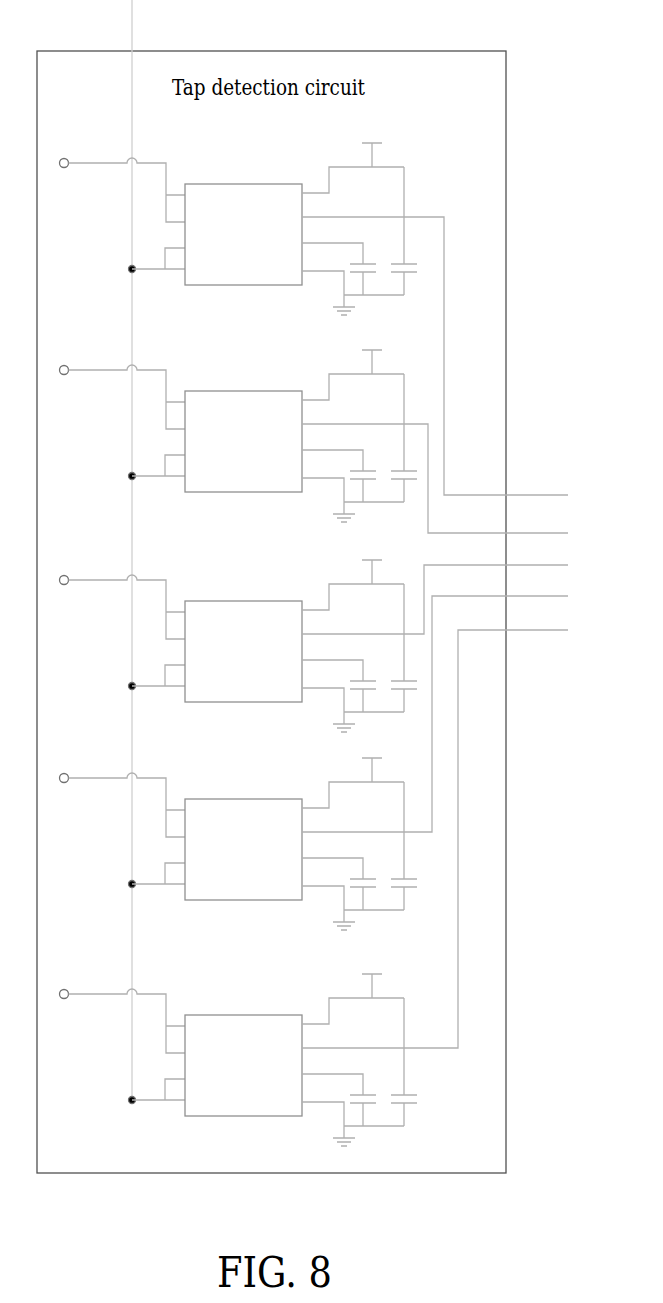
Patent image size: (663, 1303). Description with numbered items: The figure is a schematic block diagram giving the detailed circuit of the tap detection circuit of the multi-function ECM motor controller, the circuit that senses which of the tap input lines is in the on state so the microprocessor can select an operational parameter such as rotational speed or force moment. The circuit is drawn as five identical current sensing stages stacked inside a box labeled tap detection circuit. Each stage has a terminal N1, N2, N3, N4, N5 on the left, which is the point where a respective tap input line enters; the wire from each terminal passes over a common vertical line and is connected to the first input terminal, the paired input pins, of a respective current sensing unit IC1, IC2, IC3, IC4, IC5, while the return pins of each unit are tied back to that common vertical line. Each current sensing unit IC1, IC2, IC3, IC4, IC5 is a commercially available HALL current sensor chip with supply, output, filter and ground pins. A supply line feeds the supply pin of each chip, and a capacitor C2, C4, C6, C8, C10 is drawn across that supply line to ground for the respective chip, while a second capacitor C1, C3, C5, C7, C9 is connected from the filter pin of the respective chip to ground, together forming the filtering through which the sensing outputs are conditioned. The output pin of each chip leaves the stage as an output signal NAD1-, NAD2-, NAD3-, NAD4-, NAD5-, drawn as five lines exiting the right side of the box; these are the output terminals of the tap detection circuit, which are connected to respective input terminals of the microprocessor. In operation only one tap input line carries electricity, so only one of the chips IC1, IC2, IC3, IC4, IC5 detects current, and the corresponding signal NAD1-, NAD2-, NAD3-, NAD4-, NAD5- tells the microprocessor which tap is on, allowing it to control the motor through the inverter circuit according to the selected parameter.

The first tap node terminal N1 is at (123, 190).
The second tap node terminal N2 is at (120, 397).
The third tap node terminal N3 is at (119, 607).
The fourth tap node terminal N4 is at (119, 805).
The fifth tap node terminal N5 is at (118, 1021).
The first current sensing integrated circuit IC1 is at (294, 228).
The second current sensing integrated circuit IC2 is at (294, 435).
The third current sensing integrated circuit IC3 is at (294, 645).
The fourth current sensing integrated circuit IC4 is at (294, 843).
The fifth current sensing integrated circuit IC5 is at (294, 1059).
The filter capacitor C1 is at (343, 266).
The supply bypass capacitor C2 is at (408, 231).
The filter capacitor C3 is at (343, 473).
The supply bypass capacitor C4 is at (408, 438).
The filter capacitor C5 is at (343, 683).
The supply bypass capacitor C6 is at (408, 648).
The filter capacitor C7 is at (343, 881).
The supply bypass capacitor C8 is at (408, 846).
The filter capacitor C9 is at (343, 1097).
The supply bypass capacitor C10 is at (411, 1062).
The tap detection output signal 1 NAD1- is at (435, 356).
The tap detection output signal 2 NAD2- is at (435, 478).
The tap detection output signal 3 NAD3- is at (435, 586).
The tap detection output signal 4 NAD4- is at (435, 702).
The tap detection output signal 5 NAD5- is at (435, 825).